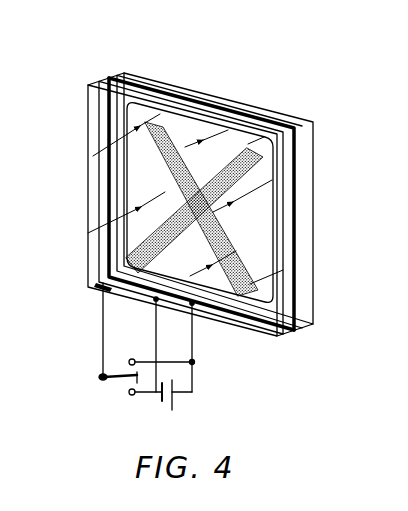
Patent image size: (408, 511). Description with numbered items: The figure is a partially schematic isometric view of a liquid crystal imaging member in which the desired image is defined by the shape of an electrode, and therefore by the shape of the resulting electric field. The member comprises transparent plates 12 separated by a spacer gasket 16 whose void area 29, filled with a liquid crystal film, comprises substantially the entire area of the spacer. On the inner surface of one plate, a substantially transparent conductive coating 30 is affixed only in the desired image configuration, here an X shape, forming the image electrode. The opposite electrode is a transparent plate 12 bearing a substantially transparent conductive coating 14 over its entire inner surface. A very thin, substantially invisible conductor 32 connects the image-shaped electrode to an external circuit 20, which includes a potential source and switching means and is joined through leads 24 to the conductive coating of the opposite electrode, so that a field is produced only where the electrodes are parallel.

The transparent plate 12 is at (88, 84).
The substantially transparent conductive coating 14 is at (110, 78).
The spacer gasket 16 is at (296, 178).
The external circuit 20 is at (202, 359).
The leads 24 is at (155, 325).
The void area 29 is at (143, 160).
The substantially transparent conductive coating 30 is at (170, 196).
The conductor 32 is at (103, 283).